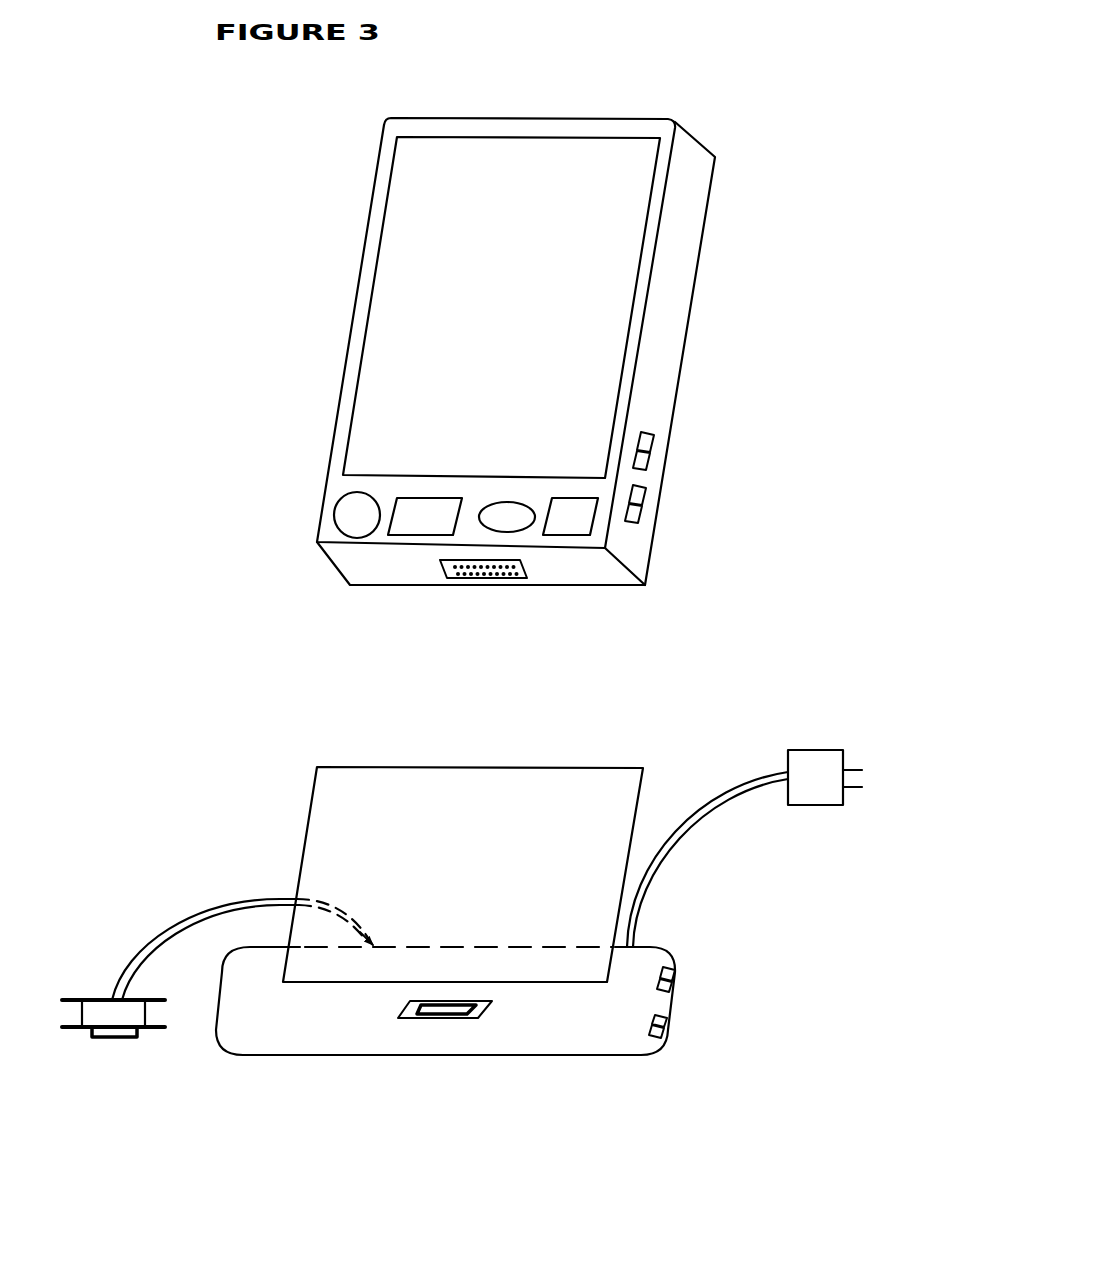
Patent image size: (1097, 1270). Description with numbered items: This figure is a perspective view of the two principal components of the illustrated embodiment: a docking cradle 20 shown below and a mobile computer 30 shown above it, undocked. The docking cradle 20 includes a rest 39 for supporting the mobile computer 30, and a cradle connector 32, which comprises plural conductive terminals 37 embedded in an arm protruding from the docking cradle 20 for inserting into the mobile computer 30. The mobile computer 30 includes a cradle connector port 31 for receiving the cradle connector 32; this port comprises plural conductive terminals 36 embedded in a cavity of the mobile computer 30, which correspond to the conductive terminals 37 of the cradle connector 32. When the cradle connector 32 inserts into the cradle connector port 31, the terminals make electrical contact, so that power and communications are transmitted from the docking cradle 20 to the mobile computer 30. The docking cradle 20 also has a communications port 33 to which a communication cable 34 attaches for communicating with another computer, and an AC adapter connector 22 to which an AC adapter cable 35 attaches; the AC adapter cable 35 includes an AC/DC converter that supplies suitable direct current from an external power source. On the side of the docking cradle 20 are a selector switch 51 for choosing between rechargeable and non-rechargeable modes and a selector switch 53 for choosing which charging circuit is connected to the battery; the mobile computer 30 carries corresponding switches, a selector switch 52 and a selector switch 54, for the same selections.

The mobile computer 30 is at (343, 372).
The selector switch 54 is at (654, 453).
The selector switch 52 is at (646, 506).
The cradle connector port 31 is at (452, 580).
The conductive terminals 36 is at (490, 573).
The rest 39 is at (605, 765).
The docking cradle 20 is at (677, 1002).
The selector switch 53 is at (677, 968).
The selector switch 51 is at (665, 1033).
The cradle connector 32 is at (475, 1018).
The conductive terminals 37 is at (420, 1018).
The communication cable 34 is at (170, 930).
The communications port 33 is at (378, 945).
The AC adapter connector 22 is at (638, 945).
The AC adapter cable 35 is at (662, 858).